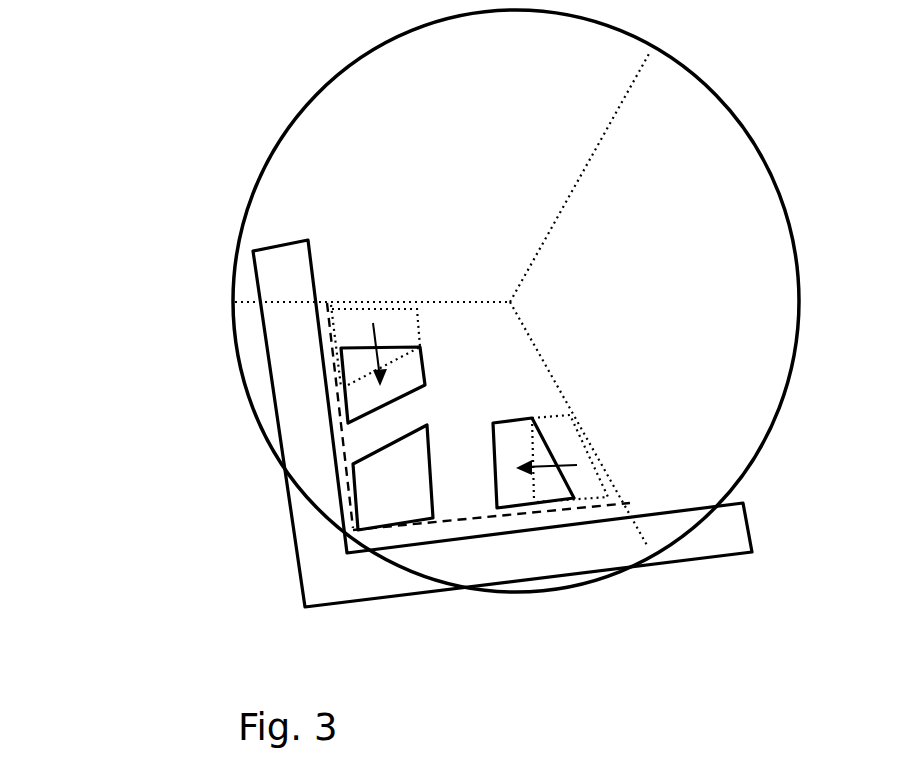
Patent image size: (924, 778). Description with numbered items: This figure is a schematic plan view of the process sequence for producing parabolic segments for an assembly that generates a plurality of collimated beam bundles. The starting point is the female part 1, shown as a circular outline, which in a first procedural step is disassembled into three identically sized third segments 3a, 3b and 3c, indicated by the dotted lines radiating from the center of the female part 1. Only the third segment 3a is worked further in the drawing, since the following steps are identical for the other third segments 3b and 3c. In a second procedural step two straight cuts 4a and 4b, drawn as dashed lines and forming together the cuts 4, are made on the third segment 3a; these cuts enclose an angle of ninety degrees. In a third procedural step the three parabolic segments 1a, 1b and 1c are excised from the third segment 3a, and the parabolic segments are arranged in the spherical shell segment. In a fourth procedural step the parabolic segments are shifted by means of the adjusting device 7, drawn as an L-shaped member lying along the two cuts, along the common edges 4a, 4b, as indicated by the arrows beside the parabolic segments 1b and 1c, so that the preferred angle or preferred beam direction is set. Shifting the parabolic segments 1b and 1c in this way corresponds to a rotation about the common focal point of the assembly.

The female part 1 is at (722, 155).
The third segment 3a is at (255, 358).
The third segment 3b is at (705, 321).
The third segment 3c is at (382, 115).
The parabolic segment 1a is at (385, 500).
The parabolic segment 1b is at (358, 338).
The parabolic segment 1c is at (582, 485).
The straight cuts 4 is at (368, 493).
The straight cut 4a is at (330, 410).
The straight cut 4b is at (478, 528).
The adjusting device 7 is at (345, 592).